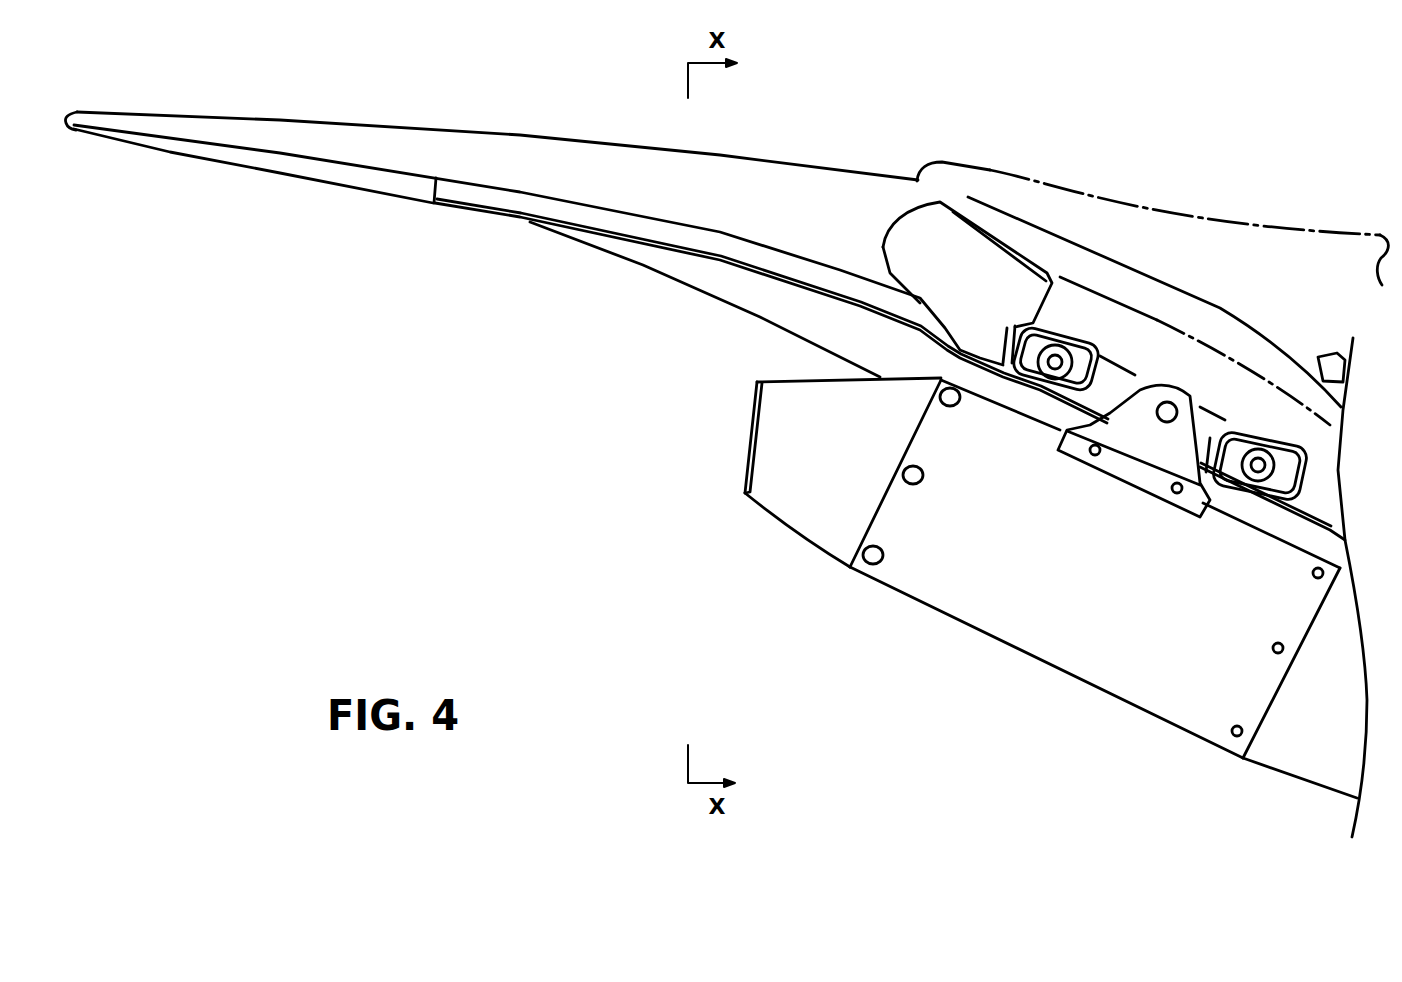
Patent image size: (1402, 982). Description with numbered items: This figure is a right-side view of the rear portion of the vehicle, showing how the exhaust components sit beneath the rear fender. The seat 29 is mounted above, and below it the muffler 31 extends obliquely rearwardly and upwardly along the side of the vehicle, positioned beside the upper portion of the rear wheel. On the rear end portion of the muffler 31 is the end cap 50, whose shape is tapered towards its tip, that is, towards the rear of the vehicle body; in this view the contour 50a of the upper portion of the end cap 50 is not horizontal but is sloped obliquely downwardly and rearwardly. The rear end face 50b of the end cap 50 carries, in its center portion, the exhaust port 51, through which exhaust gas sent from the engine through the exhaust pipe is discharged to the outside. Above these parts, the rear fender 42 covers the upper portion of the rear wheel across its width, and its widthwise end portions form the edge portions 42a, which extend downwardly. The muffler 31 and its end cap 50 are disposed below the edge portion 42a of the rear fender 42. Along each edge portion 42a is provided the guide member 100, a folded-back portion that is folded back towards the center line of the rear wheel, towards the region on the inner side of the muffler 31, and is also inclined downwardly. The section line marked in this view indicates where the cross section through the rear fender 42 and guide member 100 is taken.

The rear fender 42 is at (493, 157).
The edge portion 42a is at (845, 303).
The seat 29 is at (1243, 250).
The guide member 100 is at (806, 313).
The end cap 50 is at (798, 507).
The contour of the upper portion of the end cap 50a is at (787, 372).
The rear end face 50b is at (752, 397).
The exhaust port 51 is at (733, 453).
The muffler 31 is at (1078, 637).